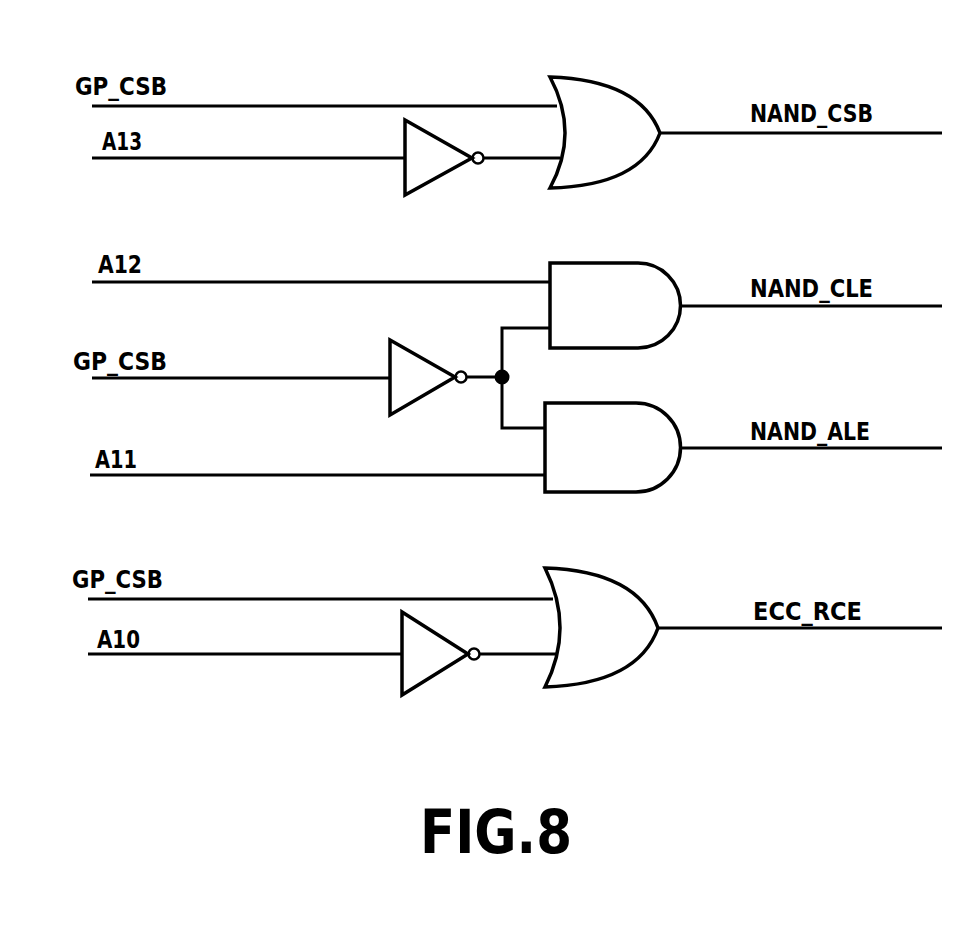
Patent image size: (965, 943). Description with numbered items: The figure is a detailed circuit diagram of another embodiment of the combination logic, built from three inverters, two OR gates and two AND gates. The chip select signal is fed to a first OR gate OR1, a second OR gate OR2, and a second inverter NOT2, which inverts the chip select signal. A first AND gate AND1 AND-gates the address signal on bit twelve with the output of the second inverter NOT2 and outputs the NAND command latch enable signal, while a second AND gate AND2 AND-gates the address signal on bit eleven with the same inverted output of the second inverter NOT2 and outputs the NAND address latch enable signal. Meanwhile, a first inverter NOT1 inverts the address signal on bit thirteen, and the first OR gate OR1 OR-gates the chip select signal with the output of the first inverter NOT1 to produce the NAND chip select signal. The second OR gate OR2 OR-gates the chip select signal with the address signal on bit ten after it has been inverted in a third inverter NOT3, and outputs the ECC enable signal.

The first OR gate OR1 is at (585, 77).
The second OR gate OR2 is at (585, 686).
The first AND gate AND1 is at (600, 263).
The second AND gate AND2 is at (600, 492).
The first inverter NOT1 is at (440, 176).
The second inverter NOT2 is at (425, 395).
The third inverter NOT3 is at (437, 673).